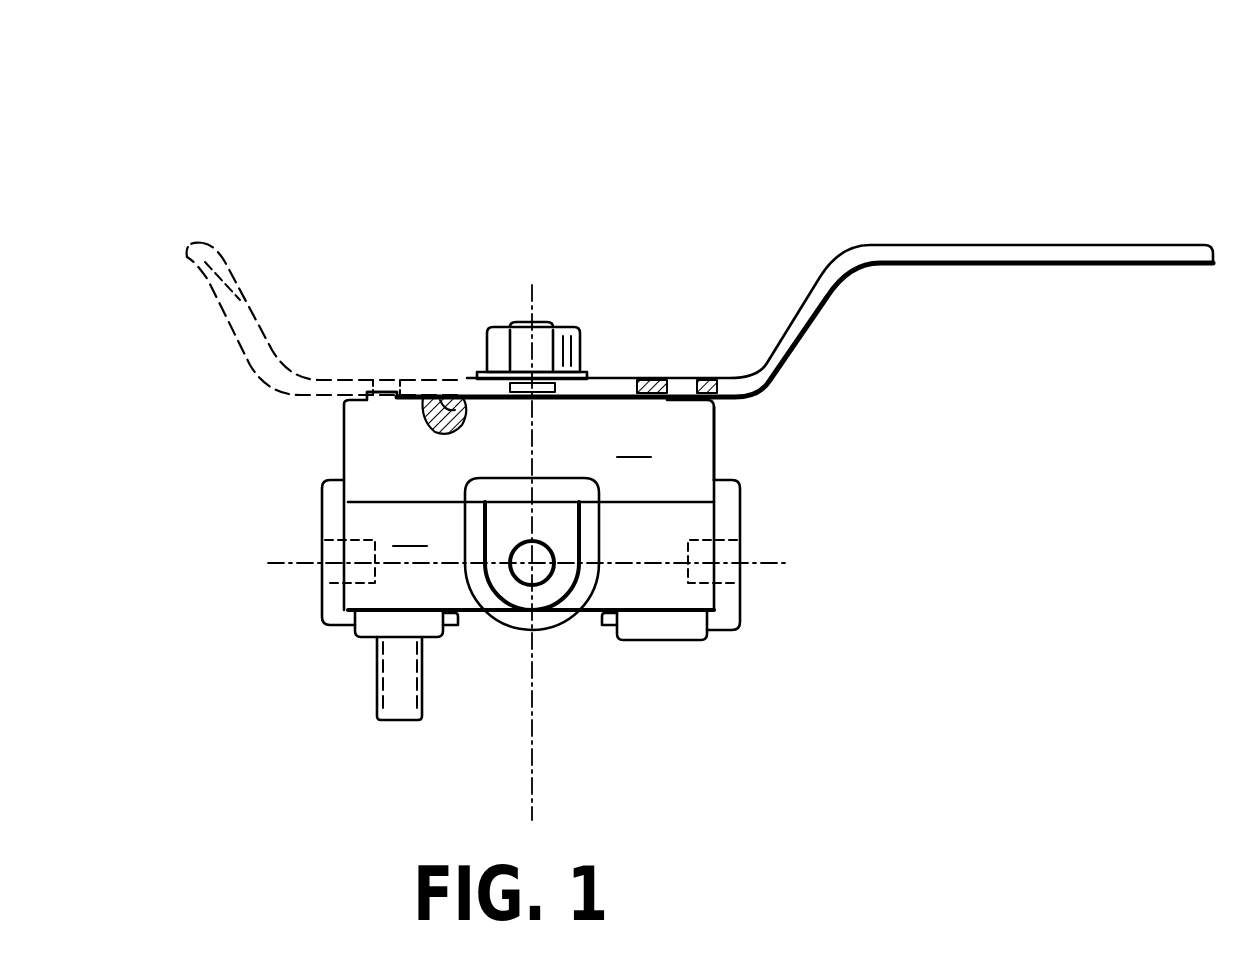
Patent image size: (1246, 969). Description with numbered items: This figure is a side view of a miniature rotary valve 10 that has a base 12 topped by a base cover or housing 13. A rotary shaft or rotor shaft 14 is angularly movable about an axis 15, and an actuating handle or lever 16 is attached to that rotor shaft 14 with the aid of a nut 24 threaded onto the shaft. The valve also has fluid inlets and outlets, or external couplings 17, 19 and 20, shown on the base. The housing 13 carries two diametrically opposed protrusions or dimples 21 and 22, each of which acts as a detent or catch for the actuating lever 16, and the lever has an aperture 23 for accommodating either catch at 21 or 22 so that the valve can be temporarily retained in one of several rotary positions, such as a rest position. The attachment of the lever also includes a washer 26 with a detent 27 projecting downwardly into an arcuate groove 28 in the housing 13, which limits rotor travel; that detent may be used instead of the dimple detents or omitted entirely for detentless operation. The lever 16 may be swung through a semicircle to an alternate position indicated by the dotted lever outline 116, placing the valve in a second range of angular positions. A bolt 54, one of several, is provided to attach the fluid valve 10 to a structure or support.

The miniature rotary valve 10 is at (728, 430).
The base 12 is at (531, 560).
The base cover or housing 13 is at (529, 501).
The rotary shaft or rotor shaft 14 is at (540, 322).
The axis 15 is at (532, 752).
The actuating handle or lever 16 is at (930, 265).
The external coupling 17 is at (552, 592).
The external coupling 19 is at (752, 560).
The external coupling 20 is at (312, 568).
The protrusion or dimple 21 is at (693, 382).
The protrusion or dimple 22 is at (375, 385).
The aperture 23 is at (668, 382).
The nut 24 is at (583, 343).
The washer 26 is at (457, 398).
The detent 27 is at (425, 407).
The arcuate groove 28 is at (437, 414).
The bolt 54 is at (367, 716).
The dotted lever outline 116 is at (233, 290).